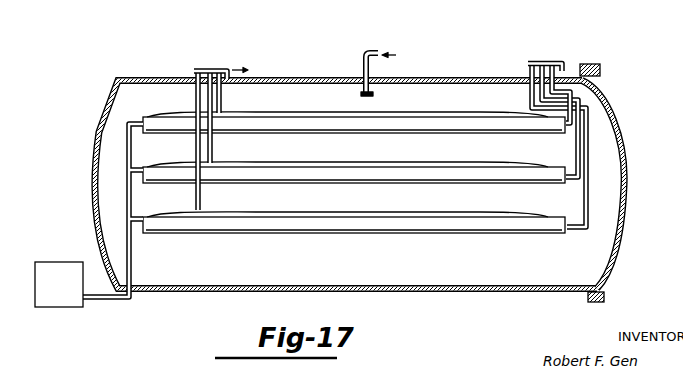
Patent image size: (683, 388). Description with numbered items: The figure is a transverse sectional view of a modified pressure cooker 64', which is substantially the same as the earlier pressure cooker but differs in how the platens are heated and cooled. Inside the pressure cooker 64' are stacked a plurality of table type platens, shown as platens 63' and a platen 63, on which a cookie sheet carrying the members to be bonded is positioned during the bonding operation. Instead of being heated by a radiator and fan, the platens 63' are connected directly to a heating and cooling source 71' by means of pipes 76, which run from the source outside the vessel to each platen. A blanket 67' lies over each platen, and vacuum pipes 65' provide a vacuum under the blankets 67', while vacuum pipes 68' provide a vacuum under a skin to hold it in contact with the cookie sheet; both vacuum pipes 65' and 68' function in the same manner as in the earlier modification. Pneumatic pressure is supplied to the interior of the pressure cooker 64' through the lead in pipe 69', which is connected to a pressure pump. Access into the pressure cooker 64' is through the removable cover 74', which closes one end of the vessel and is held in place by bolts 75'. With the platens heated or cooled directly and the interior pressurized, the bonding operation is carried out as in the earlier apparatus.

The pressure cooker 64' is at (346, 182).
The vacuum pipe 65' is at (239, 120).
The lead in pipe 69' is at (406, 60).
The vacuum pipe 68' is at (577, 132).
The bolt 75' is at (624, 79).
The removable cover 74' is at (630, 192).
The blanket 67' is at (347, 153).
The platen 63' is at (354, 161).
The table type platen 63 is at (354, 238).
The pipe 76 is at (133, 251).
The heating and cooling source 71' is at (82, 286).